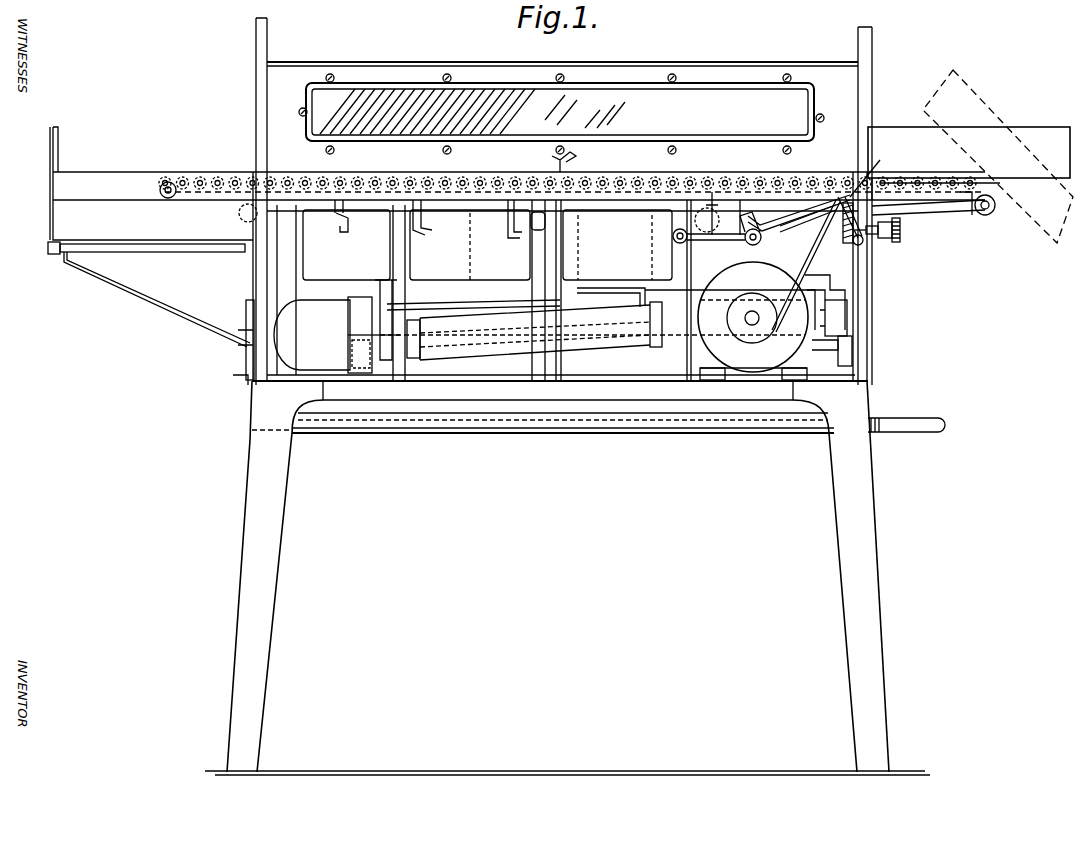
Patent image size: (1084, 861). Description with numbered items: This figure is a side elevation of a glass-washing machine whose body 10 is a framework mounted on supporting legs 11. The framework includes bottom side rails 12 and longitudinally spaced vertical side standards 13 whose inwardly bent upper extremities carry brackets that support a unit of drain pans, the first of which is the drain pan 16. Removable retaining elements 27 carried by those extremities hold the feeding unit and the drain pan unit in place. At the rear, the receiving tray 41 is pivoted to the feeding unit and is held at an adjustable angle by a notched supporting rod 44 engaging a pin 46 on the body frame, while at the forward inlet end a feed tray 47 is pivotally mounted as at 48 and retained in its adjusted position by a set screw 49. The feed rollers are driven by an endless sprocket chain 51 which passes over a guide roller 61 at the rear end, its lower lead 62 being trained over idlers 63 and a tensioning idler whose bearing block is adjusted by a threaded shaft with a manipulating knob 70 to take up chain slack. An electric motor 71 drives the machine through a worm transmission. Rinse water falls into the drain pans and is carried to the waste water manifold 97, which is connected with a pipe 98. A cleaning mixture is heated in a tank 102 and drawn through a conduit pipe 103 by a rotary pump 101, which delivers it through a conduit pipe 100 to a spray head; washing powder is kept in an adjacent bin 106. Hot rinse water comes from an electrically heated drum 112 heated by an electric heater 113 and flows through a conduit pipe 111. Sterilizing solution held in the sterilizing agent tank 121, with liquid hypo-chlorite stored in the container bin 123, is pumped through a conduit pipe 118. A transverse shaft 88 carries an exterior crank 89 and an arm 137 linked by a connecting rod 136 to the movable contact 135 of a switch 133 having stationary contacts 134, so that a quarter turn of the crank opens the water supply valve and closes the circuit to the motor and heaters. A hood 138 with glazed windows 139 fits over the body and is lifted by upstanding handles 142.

The body of the machine 10 is at (866, 348).
The supporting legs 11 is at (271, 610).
The bottom side rails 12 is at (613, 402).
The vertical side standards 13 is at (262, 298).
The drain pan 16 is at (942, 202).
The removable retaining elements 27 is at (556, 163).
The receiving tray 41 is at (62, 220).
The supporting rod 44 is at (248, 286).
The pin 46 is at (240, 378).
The feed tray 47 is at (1043, 128).
The pivot of feed tray 48 is at (998, 157).
The set screw 49 is at (992, 214).
The endless sprocket chain 51 is at (975, 214).
The guide roller 61 is at (172, 182).
The lower lead of sprocket chain 62 is at (350, 204).
The idlers 63 is at (240, 218).
The manipulating knob 70 is at (896, 231).
The electric motor 71 is at (772, 383).
The transverse shaft 88 is at (762, 242).
The crank 89 is at (712, 190).
The waste water manifold 97 is at (487, 427).
The pipe 98 is at (928, 433).
The conduit pipe 100 is at (832, 276).
The rotary pump 101 is at (850, 350).
The tank 102 is at (617, 245).
The conduit pipe 103 is at (849, 318).
The bin 106 is at (501, 226).
The conduit pipe 111 is at (628, 290).
The electrically heated drum 112 is at (638, 340).
The electric heater 113 is at (337, 335).
The conduit pipe 118 is at (415, 310).
The sterilizing agent tank 121 is at (346, 245).
The container bin 123 is at (470, 240).
The switch 133 is at (856, 240).
The stationary contacts 134 is at (883, 172).
The movable contact 135 is at (838, 196).
The connecting rod 136 is at (790, 212).
The arm 137 is at (742, 198).
The hood 138 is at (656, 62).
The glazed windows 139 is at (560, 112).
The upstanding handles 142 is at (268, 35).